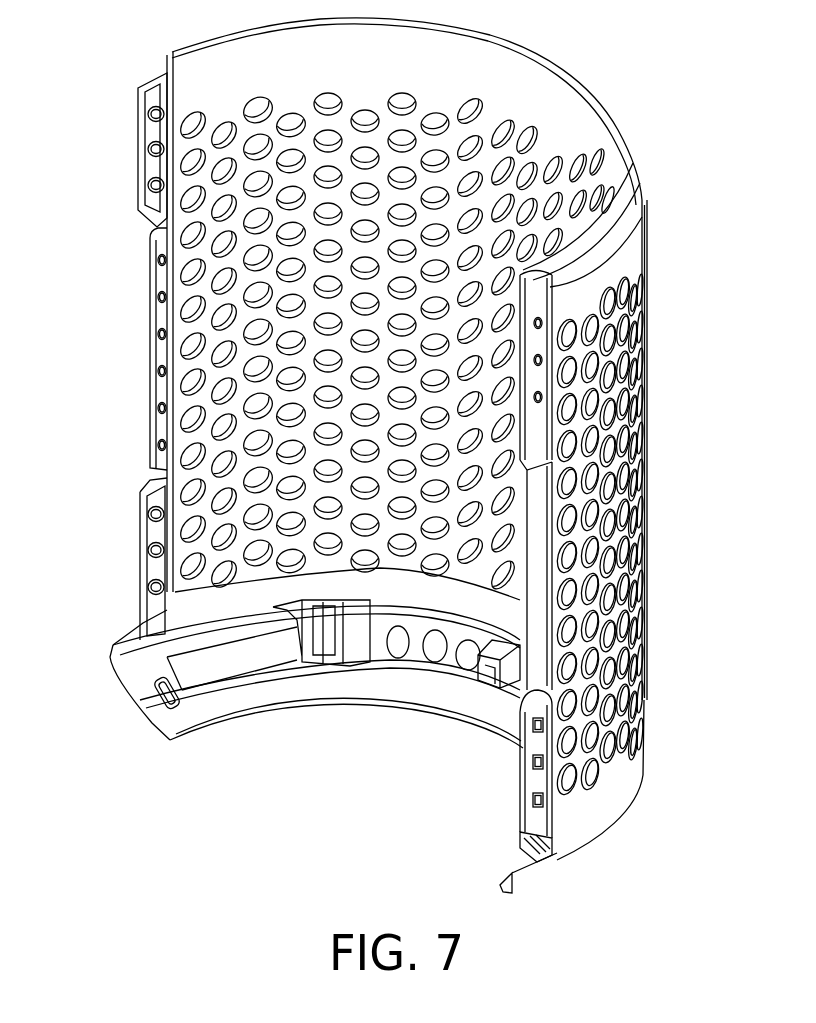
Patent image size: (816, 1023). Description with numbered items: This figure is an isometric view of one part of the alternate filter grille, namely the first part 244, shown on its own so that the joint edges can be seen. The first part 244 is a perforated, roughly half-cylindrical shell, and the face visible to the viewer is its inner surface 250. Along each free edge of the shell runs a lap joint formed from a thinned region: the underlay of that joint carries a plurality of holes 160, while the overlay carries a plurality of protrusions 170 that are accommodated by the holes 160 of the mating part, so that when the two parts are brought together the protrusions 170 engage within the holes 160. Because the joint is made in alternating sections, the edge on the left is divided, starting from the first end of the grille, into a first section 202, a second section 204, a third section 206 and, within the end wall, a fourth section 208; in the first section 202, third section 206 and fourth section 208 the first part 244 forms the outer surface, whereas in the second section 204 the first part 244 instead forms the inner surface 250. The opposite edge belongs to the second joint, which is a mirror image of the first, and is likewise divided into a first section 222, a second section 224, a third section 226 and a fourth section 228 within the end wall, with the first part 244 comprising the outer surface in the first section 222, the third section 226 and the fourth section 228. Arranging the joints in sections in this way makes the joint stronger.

The holes 160 is at (162, 333).
The protrusions 170 is at (160, 138).
The first section 202 is at (105, 88).
The second section 204 is at (105, 228).
The third section 206 is at (105, 478).
The fourth section 208 is at (105, 650).
The first section 222 is at (528, 275).
The second section 224 is at (548, 433).
The third section 226 is at (540, 689).
The fourth section 228 is at (560, 860).
The first part 244 is at (630, 95).
The inner surface 250 is at (462, 82).